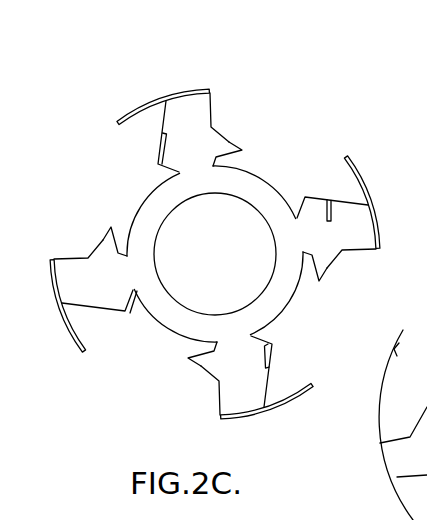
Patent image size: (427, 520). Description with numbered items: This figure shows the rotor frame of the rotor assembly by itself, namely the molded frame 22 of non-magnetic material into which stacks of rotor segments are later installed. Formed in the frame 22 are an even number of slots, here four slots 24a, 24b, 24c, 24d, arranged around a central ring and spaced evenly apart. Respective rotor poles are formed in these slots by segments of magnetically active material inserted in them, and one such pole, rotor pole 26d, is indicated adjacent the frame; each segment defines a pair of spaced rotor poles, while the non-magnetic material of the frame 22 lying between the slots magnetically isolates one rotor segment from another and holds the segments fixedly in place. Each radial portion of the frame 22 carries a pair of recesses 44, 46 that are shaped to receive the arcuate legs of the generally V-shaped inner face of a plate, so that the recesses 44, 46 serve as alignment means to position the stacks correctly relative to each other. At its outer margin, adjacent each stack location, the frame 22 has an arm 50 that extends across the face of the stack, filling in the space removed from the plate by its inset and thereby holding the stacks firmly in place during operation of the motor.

The molded frame 22 is at (231, 247).
The slot 24a is at (281, 176).
The slot 24b is at (291, 314).
The slot 24c is at (173, 340).
The slot 24d is at (148, 189).
The recess 44 is at (161, 134).
The recess 46 is at (227, 146).
The arm 50 is at (155, 97).
The rotor pole 26d is at (376, 418).